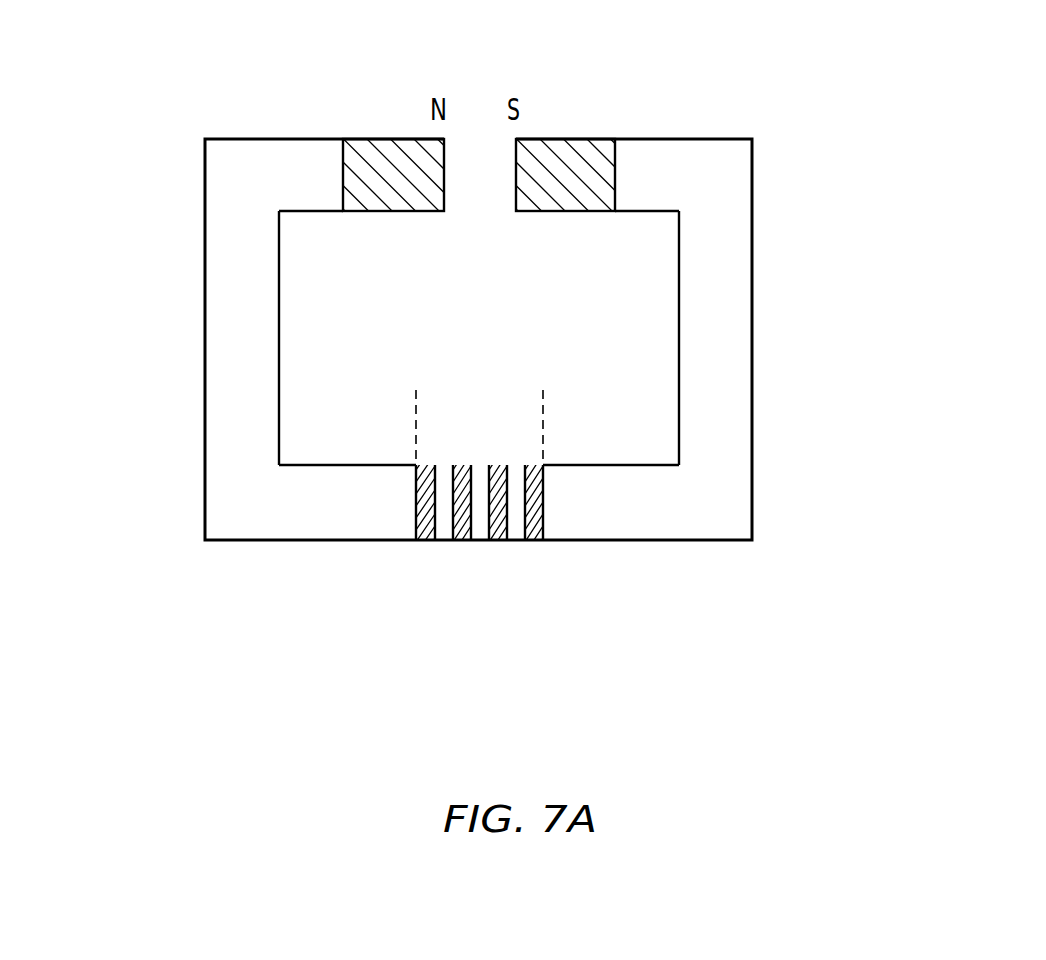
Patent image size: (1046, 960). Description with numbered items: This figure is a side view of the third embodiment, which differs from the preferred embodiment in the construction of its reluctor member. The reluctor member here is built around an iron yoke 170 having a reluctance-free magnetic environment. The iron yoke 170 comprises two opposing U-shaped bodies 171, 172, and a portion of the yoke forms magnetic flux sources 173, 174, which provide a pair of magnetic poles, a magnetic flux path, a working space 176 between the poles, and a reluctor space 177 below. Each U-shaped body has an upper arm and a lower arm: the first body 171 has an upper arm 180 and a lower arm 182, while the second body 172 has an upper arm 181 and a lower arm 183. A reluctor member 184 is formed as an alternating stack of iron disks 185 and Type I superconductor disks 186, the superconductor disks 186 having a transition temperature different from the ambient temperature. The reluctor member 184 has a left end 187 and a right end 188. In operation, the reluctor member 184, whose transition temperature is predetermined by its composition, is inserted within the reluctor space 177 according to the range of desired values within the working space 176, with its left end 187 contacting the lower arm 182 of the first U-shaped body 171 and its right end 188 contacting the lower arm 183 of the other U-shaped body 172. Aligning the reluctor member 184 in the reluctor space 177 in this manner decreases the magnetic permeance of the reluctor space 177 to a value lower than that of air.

The iron yoke 170 is at (796, 76).
The U-shaped body 171 is at (250, 322).
The U-shaped body 172 is at (708, 322).
The magnetic flux source 173 is at (370, 148).
The magnetic flux source 174 is at (590, 150).
The working space 176 is at (472, 178).
The reluctor space 177 is at (597, 408).
The upper arm 180 is at (250, 183).
The upper arm 181 is at (708, 185).
The lower arm 182 is at (250, 495).
The lower arm 183 is at (708, 498).
The reluctor member 184 is at (523, 576).
The iron disk 185 is at (420, 542).
The Type I superconductor disk 186 is at (445, 527).
The left end 187 is at (415, 508).
The right end 188 is at (547, 508).